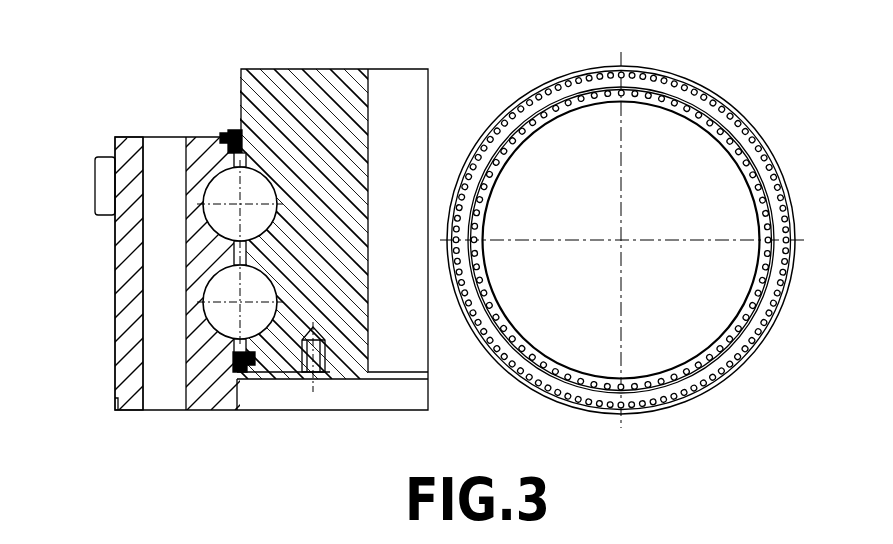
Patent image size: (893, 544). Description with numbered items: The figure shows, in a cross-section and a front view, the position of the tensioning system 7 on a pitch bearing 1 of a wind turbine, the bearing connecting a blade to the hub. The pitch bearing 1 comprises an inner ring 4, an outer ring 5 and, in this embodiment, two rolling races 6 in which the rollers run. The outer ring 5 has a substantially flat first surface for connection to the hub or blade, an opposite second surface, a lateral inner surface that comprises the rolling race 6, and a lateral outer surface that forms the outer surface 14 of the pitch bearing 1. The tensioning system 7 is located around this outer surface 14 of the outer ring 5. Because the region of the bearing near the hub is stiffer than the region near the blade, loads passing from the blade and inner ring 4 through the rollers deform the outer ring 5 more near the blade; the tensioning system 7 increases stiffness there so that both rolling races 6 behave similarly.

The pitch bearing 1 is at (186, 436).
The inner ring 4 is at (338, 318).
The outer ring 5 is at (122, 373).
The rolling race 6 is at (228, 184).
The tensioning system 7 is at (102, 160).
The outer surface 14 is at (115, 255).